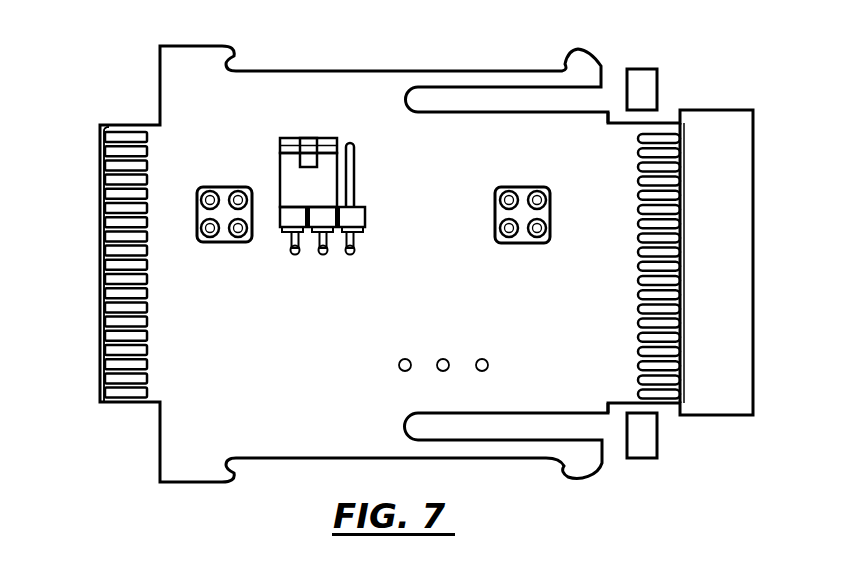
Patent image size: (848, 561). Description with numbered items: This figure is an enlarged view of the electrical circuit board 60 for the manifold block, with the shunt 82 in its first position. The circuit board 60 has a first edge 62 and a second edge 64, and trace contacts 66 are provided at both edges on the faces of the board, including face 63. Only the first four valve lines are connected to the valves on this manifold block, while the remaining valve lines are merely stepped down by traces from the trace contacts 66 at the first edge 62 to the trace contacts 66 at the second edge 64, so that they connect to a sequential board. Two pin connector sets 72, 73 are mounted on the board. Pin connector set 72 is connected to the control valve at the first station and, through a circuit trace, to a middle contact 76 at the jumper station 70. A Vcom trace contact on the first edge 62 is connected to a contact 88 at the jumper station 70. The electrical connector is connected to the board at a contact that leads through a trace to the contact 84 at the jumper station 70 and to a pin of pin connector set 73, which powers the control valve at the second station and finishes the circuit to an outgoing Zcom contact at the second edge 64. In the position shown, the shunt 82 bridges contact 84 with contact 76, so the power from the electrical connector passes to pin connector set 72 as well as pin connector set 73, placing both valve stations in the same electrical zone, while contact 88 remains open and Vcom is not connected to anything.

The electrical circuit board 60 is at (404, 70).
The first edge 62 is at (110, 193).
The face 63 is at (493, 314).
The second edge 64 is at (753, 152).
The trace contacts 66 is at (145, 360).
The jumper station 70 is at (329, 221).
The pin connector set 72 is at (204, 189).
The pin connector set 73 is at (539, 186).
The middle contact 76 is at (320, 245).
The shunt 82 is at (288, 176).
The contact 84 is at (293, 244).
The contact 88 is at (357, 238).